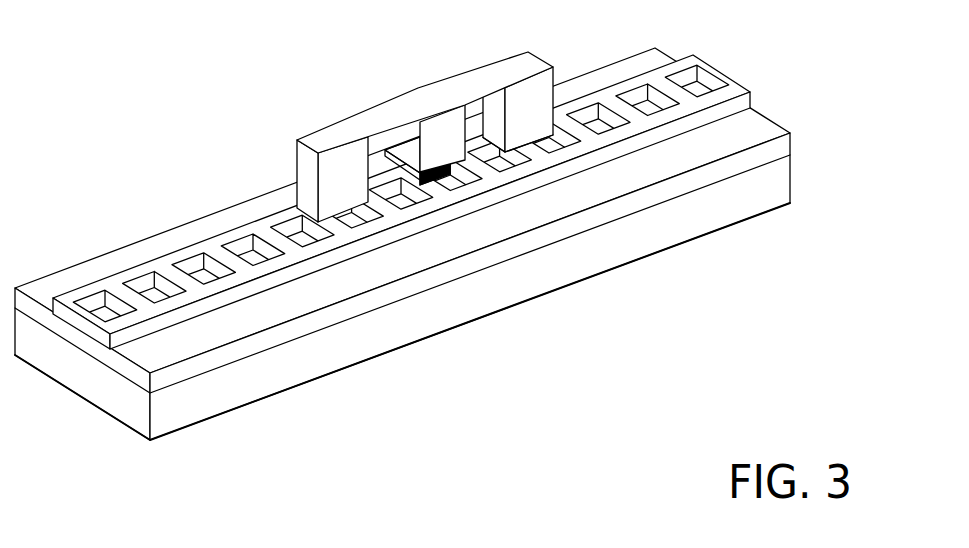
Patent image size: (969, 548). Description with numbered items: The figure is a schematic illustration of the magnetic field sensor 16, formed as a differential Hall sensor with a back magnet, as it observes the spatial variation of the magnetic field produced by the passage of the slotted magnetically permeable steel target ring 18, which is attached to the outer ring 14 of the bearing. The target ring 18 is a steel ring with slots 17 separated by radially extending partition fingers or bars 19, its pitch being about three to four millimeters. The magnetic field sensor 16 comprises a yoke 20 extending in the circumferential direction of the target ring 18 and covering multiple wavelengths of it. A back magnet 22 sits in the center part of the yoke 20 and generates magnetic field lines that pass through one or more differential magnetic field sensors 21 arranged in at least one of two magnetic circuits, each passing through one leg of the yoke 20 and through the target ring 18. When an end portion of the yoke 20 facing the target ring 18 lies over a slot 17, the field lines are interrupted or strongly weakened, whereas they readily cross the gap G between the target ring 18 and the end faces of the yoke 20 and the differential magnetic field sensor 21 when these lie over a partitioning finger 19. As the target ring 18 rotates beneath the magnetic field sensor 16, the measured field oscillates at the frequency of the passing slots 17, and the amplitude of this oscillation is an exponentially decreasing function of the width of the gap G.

The outer ring 14 is at (420, 320).
The magnetic field sensor 16 is at (403, 93).
The slots 17 is at (197, 265).
The target ring 18 is at (657, 80).
The partition fingers or bars 19 is at (122, 286).
The yoke 20 is at (475, 87).
The differential magnetic field sensor 21 is at (442, 152).
The back magnet 22 is at (432, 172).
The gap G is at (527, 147).